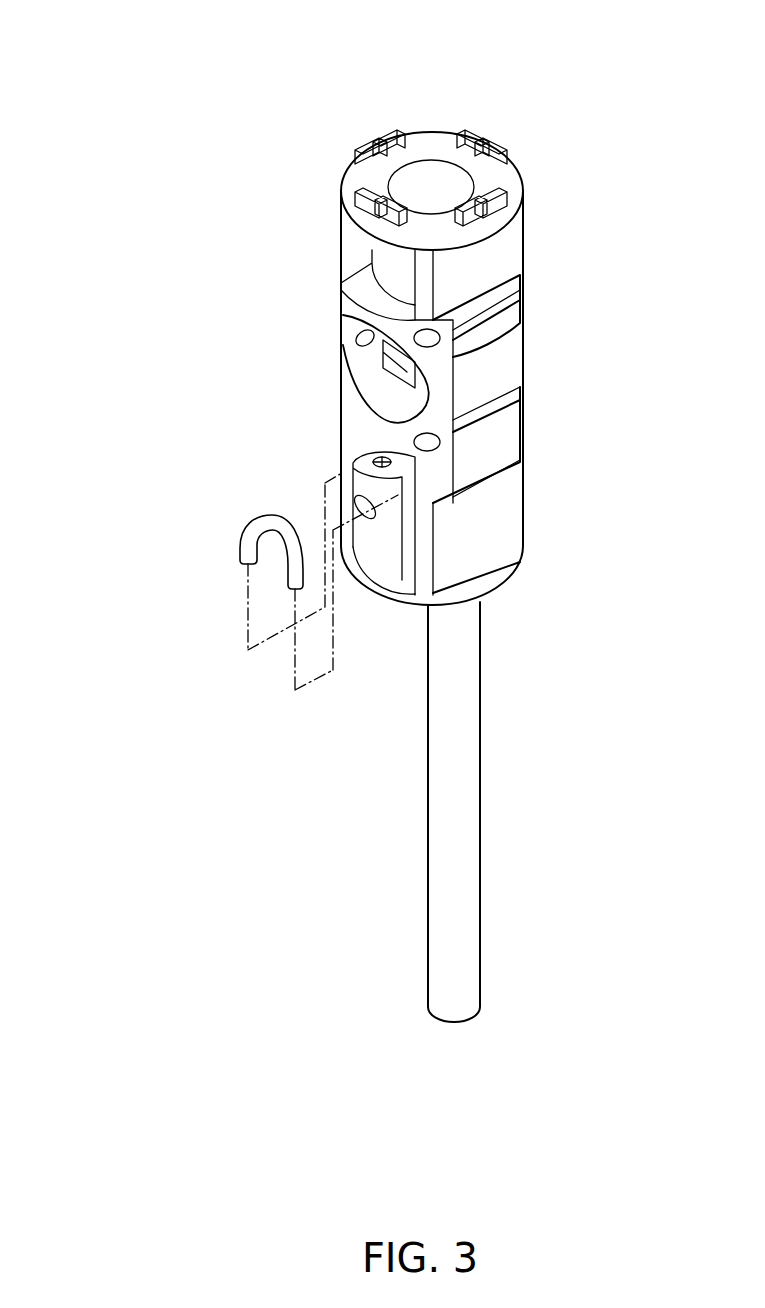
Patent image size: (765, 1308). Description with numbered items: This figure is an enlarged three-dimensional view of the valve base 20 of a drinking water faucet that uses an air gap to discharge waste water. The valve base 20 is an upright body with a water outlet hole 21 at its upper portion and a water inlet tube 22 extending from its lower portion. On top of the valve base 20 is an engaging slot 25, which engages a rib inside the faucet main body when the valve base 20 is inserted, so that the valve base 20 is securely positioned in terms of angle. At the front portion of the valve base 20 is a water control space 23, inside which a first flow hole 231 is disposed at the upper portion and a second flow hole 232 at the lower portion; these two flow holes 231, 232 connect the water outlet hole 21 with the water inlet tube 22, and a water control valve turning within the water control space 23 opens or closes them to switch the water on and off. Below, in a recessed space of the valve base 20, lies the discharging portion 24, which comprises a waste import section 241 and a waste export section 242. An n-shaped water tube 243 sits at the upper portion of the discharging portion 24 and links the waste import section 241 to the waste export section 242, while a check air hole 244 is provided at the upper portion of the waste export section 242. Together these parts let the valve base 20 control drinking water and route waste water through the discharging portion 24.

The valve base 20 is at (372, 110).
The water outlet hole 21 is at (400, 183).
The water inlet tube 22 is at (453, 832).
The water control space 23 is at (347, 338).
The first flow hole 231 is at (437, 322).
The second flow hole 232 is at (407, 377).
The discharging portion 24 is at (425, 462).
The waste import section 241 is at (470, 563).
The waste export section 242 is at (375, 462).
The n-shaped water tube 243 is at (250, 547).
The check air hole 244 is at (390, 588).
The engaging slot 25 is at (477, 143).